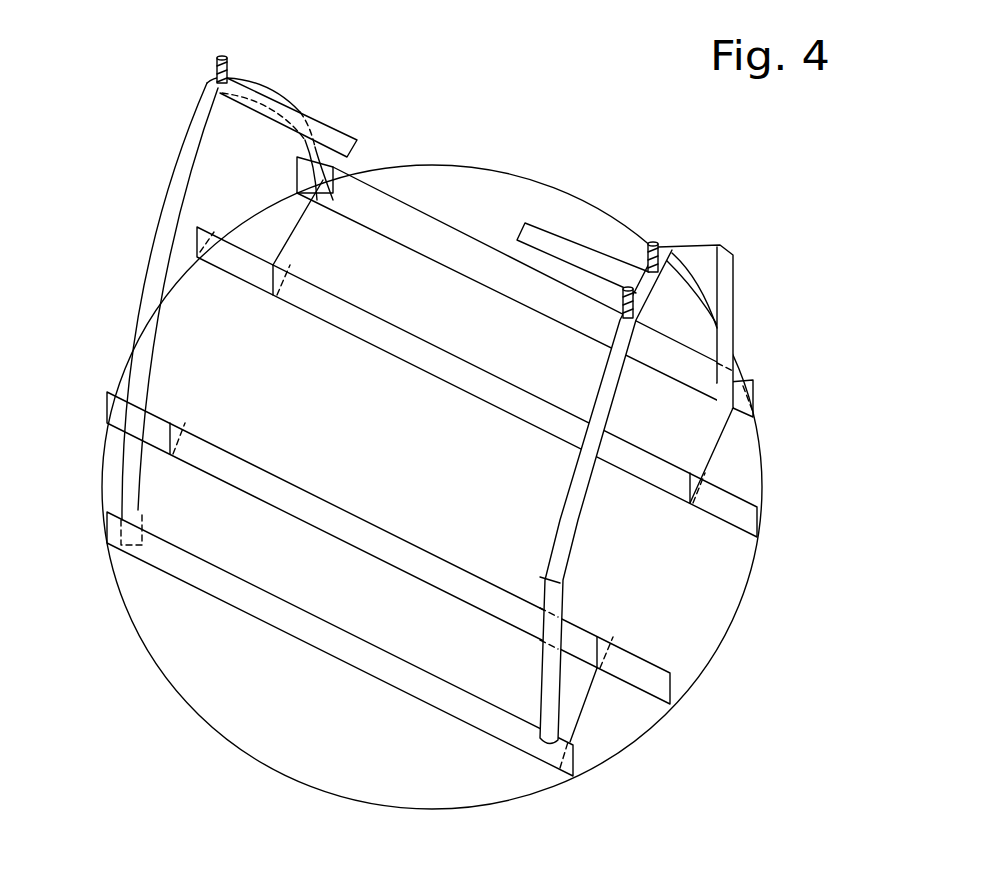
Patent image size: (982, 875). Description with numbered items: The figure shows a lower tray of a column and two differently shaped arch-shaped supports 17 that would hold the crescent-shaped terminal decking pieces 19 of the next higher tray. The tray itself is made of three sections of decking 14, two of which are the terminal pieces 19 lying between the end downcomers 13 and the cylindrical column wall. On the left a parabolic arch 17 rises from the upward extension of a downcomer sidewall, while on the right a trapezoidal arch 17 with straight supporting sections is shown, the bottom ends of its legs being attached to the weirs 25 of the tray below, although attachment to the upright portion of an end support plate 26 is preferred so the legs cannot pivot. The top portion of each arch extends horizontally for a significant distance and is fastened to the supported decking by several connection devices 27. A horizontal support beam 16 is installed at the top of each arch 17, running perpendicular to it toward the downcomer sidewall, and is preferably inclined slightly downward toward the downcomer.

The downcomers 13 is at (490, 347).
The decking 14 is at (713, 582).
The horizontal support beam 16 is at (543, 242).
The arch-shaped support 17 is at (752, 277).
The terminal decking piece 19 is at (593, 223).
The weir 25 is at (417, 720).
The end support plate 26 is at (260, 227).
The connection device 27 is at (217, 66).